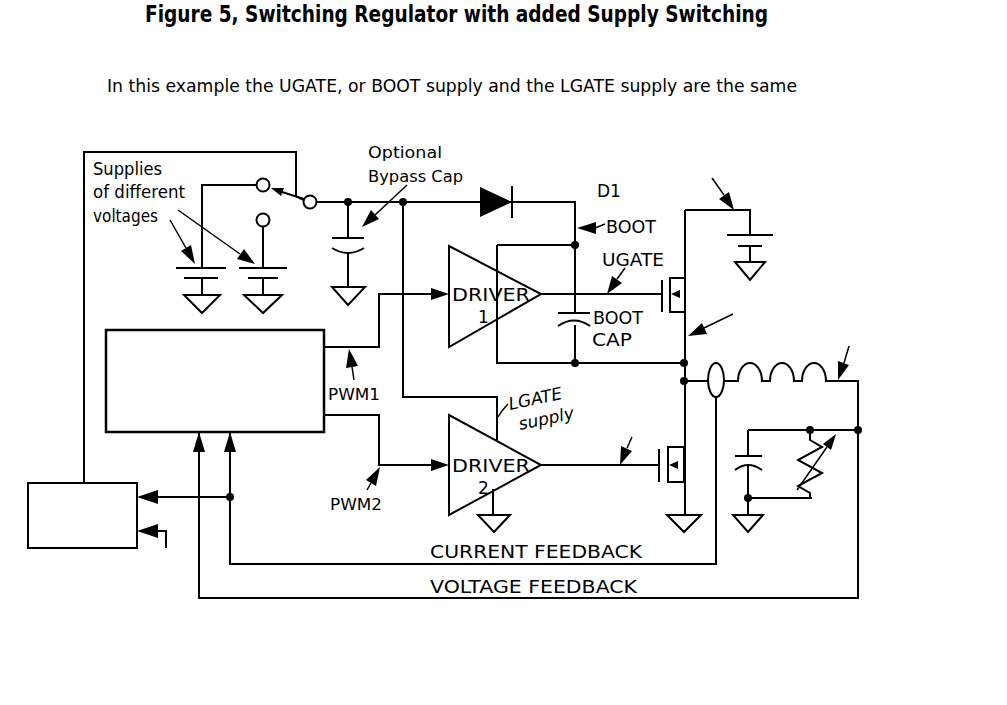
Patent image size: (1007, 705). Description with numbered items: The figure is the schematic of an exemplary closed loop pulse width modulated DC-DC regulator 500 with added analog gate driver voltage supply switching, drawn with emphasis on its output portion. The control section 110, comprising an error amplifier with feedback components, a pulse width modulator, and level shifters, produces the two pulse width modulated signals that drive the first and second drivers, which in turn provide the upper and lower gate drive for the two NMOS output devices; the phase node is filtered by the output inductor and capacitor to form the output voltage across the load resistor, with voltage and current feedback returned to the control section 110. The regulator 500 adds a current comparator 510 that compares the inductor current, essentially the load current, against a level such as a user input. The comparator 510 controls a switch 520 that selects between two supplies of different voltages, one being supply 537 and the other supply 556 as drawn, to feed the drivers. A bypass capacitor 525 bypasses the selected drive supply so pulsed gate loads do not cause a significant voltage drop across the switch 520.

The control section 110 is at (148, 322).
The closed loop pulse width modulated DC-DC regulator 500 is at (829, 233).
The current comparator 510 is at (83, 550).
The switch 520 is at (303, 187).
The bypass capacitor 525 is at (331, 242).
The voltage supply 537 is at (268, 267).
The first supply of different voltage 556 is at (193, 272).